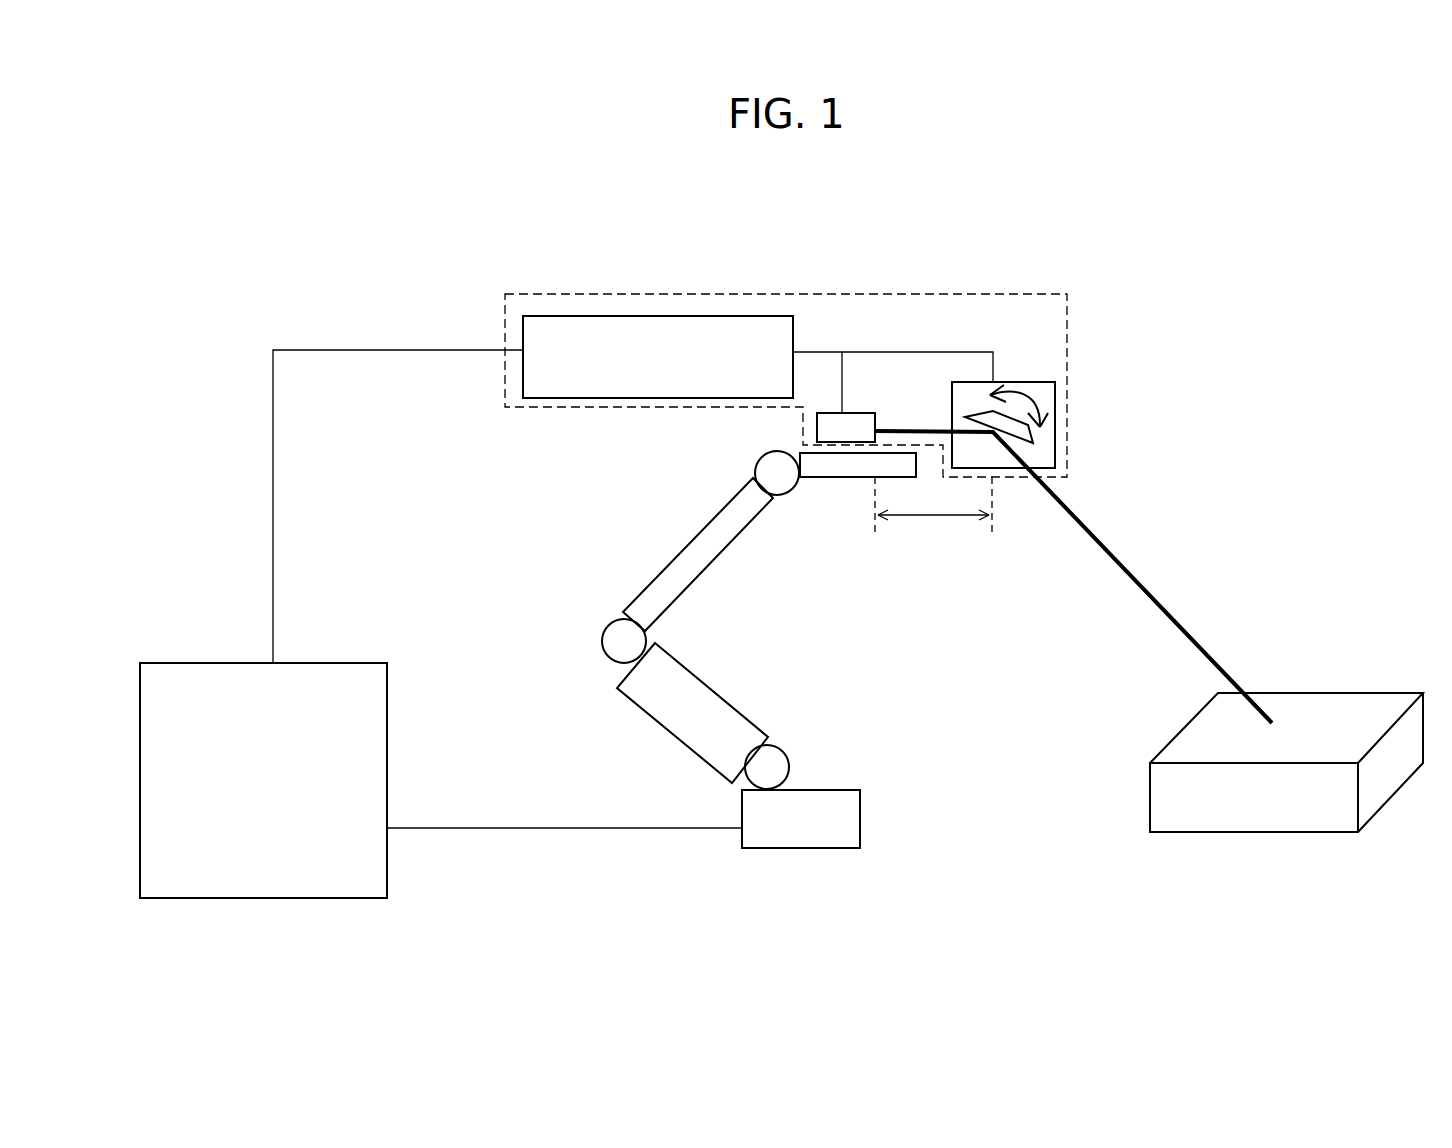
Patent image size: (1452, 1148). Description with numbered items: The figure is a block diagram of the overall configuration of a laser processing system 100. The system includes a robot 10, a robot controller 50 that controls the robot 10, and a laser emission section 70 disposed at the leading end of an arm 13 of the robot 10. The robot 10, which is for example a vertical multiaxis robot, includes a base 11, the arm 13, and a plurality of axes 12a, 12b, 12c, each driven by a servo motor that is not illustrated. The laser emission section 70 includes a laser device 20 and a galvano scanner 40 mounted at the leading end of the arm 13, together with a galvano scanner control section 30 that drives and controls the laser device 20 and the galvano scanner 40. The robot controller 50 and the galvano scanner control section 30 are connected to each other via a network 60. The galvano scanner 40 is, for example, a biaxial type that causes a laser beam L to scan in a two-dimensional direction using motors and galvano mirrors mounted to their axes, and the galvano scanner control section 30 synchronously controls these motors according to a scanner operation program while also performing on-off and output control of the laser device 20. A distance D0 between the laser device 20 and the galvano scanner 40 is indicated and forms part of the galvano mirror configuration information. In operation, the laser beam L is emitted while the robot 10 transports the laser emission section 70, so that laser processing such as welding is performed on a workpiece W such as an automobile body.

The laser processing system 100 is at (268, 318).
The robot 10 is at (738, 638).
The base 11 is at (860, 823).
The axis 12a is at (789, 765).
The axis 12b is at (604, 640).
The axis 12c is at (765, 460).
The arm 13 is at (822, 582).
The laser device 20 is at (855, 413).
The galvano scanner control section 30 is at (676, 316).
The galvano scanner 40 is at (1056, 420).
The robot controller 50 is at (225, 663).
The network 60 is at (273, 543).
The laser emission section 70 is at (958, 294).
The laser beam L is at (1118, 567).
The distance D0 is at (933, 514).
The workpiece W is at (1385, 773).